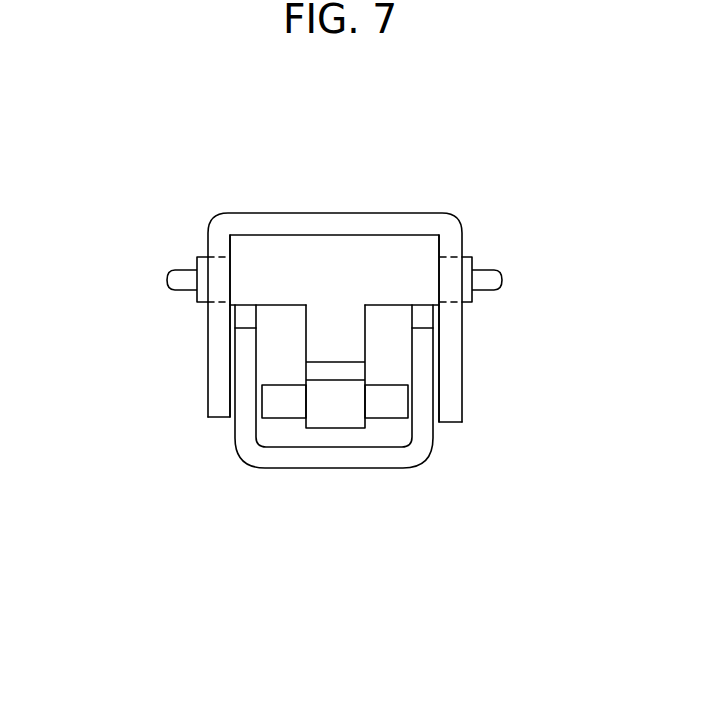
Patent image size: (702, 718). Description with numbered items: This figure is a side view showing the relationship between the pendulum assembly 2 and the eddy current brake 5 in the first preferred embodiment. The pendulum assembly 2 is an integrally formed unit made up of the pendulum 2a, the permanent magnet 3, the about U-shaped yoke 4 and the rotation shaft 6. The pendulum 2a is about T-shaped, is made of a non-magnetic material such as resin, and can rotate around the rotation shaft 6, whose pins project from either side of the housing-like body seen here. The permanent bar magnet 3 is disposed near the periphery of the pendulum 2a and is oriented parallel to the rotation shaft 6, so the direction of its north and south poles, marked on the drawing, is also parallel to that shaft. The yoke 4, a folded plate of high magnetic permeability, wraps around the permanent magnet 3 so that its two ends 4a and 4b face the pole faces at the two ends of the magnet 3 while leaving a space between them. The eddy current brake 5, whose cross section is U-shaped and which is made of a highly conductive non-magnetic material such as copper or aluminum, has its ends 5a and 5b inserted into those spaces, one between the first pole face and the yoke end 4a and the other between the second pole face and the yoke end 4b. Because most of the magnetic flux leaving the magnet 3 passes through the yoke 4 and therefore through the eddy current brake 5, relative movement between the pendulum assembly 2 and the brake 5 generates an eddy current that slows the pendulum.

The pendulum assembly 2 is at (418, 212).
The pendulum 2a is at (273, 257).
The permanent magnet 3 is at (295, 410).
The U-shaped yoke 4 is at (327, 225).
The end of yoke 4a is at (215, 384).
The end of yoke 4b is at (452, 395).
The eddy current brake 5 is at (345, 458).
The end of eddy current brake 5a is at (248, 417).
The end of eddy current brake 5b is at (423, 412).
The rotation shaft 6 is at (497, 277).